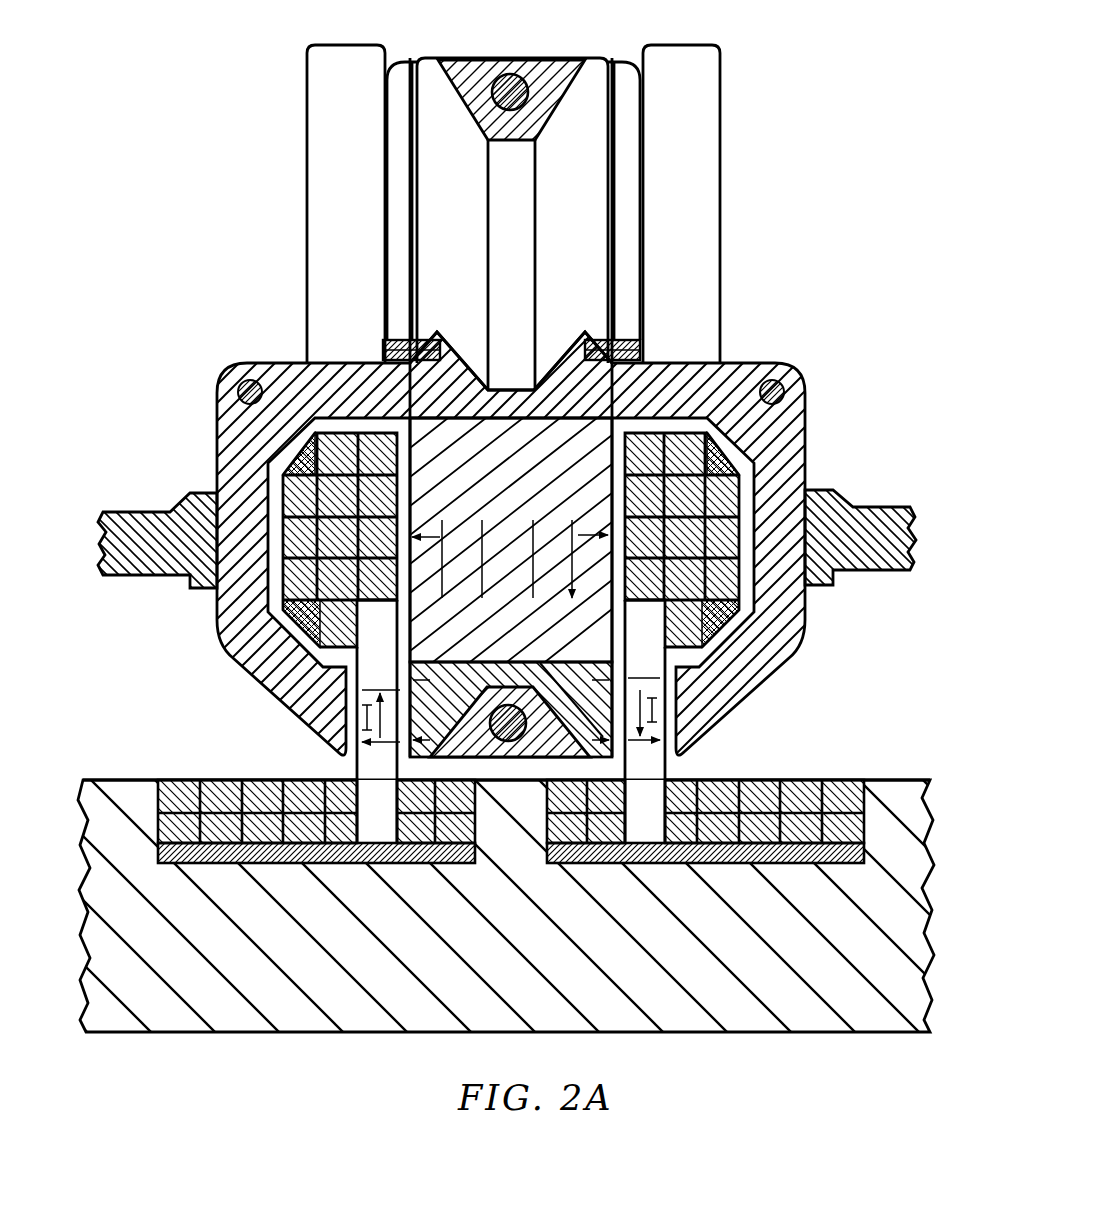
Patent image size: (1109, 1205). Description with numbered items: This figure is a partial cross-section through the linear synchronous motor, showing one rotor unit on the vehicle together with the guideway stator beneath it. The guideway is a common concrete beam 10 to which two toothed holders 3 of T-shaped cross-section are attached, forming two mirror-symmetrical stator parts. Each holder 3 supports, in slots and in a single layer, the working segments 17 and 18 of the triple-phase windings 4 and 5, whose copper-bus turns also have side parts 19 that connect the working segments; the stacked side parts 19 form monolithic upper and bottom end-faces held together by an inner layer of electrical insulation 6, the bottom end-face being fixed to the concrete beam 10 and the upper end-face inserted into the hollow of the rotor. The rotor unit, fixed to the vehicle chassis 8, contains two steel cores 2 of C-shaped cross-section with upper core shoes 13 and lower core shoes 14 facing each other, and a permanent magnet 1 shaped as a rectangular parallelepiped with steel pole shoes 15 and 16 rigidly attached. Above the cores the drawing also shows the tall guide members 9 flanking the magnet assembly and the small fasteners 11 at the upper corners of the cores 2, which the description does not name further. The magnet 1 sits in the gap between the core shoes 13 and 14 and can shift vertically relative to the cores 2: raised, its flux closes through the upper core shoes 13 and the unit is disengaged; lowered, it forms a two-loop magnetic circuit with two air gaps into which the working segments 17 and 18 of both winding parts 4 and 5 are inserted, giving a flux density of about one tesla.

The permanent magnet 1 is at (566, 464).
The steel core 2 is at (235, 470).
The toothed holder 3 is at (387, 863).
The triple-phase winding 4 is at (741, 554).
The triple-phase winding 5 is at (301, 551).
The electrical insulation 6 is at (296, 459).
The vehicle chassis 8 is at (146, 537).
The guide blocks 9 is at (339, 128).
The concrete beam 10 is at (893, 826).
The fastening pins 11 is at (248, 382).
The upper core shoe 13 is at (397, 221).
The lower core shoe 14 is at (322, 699).
The steel pole shoe 15 is at (453, 373).
The steel pole shoe 16 is at (585, 705).
The working segment 17 is at (366, 716).
The working segment 18 is at (652, 718).
The side part 19 is at (183, 828).